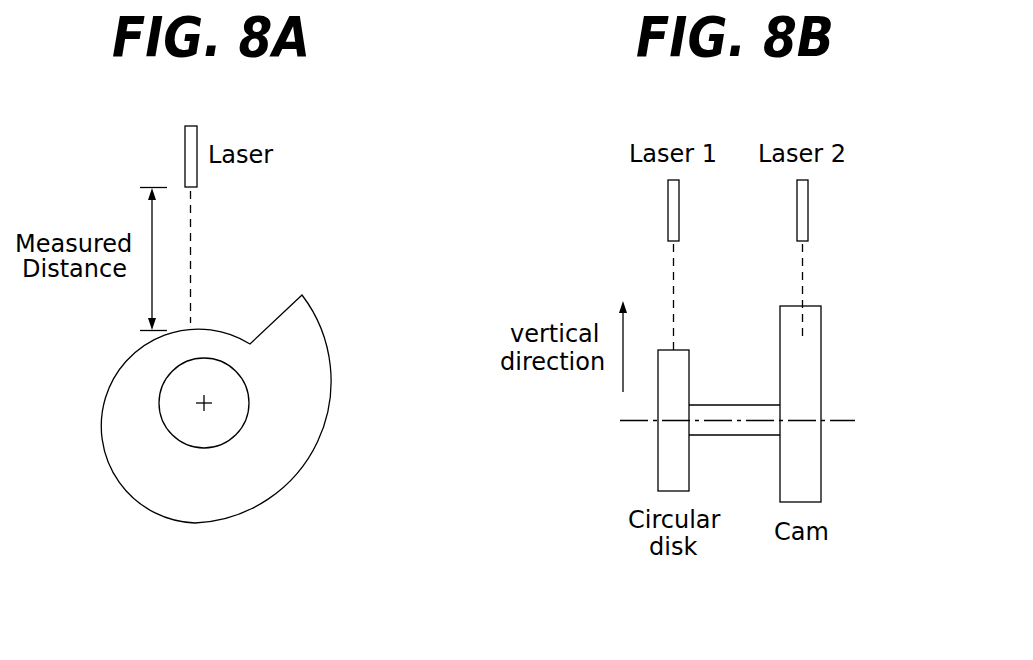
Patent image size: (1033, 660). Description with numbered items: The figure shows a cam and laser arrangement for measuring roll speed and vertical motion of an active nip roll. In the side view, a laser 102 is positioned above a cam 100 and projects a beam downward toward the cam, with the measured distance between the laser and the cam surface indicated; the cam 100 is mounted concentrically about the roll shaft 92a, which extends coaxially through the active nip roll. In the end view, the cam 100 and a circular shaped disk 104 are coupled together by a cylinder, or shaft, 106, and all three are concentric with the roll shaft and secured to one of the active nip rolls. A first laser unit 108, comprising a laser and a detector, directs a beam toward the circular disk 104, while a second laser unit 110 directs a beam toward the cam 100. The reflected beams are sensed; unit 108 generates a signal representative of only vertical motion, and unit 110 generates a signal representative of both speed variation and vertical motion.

In FIG. 8A, the laser 102 is at (170, 150).
In FIG. 8A, the cam 100 is at (243, 497).
In FIG. 8B, the cam 100 is at (810, 473).
In FIG. 8A, the shaft 92a is at (250, 407).
In FIG. 8B, the first laser unit 108 is at (667, 213).
In FIG. 8B, the second laser unit 110 is at (809, 208).
In FIG. 8B, the circular shaped disk 104 is at (657, 462).
In FIG. 8B, the cylinder 106 is at (725, 437).